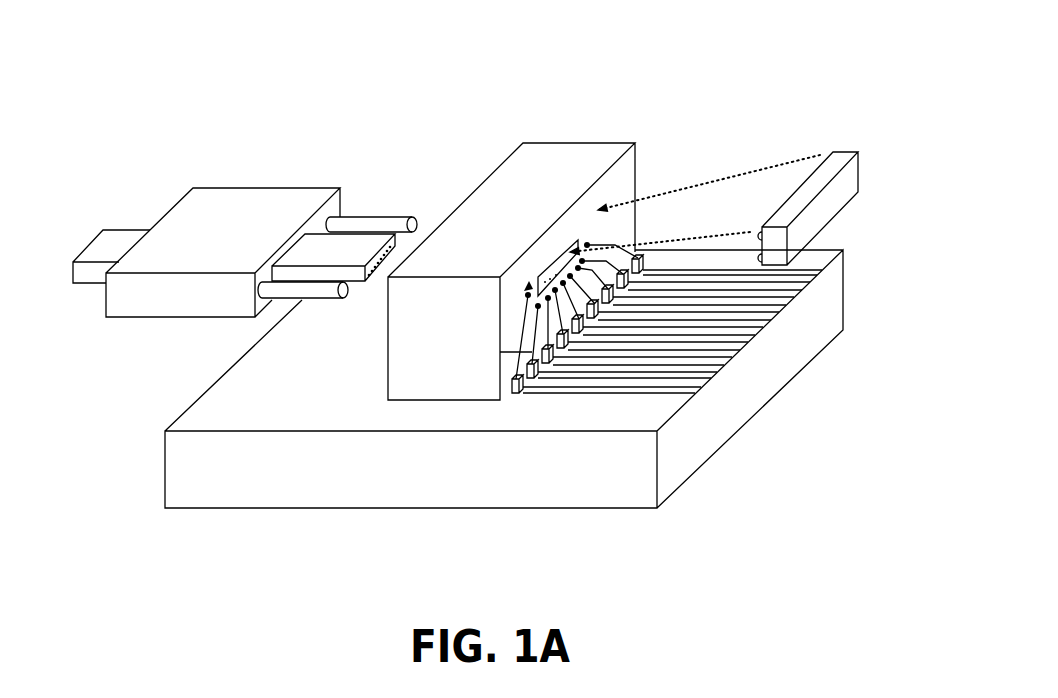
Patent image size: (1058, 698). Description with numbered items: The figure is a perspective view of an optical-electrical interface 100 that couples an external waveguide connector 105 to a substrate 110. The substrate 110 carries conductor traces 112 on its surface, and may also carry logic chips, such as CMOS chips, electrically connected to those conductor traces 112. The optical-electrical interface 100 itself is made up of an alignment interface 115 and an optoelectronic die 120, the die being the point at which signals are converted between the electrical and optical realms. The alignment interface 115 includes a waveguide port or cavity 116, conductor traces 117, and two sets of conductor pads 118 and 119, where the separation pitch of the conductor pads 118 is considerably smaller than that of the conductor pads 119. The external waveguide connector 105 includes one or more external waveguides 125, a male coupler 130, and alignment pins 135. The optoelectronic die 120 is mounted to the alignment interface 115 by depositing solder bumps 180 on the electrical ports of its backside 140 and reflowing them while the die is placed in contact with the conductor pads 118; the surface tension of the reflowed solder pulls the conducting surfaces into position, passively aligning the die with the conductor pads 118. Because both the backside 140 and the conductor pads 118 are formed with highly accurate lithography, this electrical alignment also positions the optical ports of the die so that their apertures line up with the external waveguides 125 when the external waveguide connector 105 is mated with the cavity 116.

The optical-electrical interface 100 is at (728, 78).
The external waveguide connector 105 is at (245, 240).
The substrate 110 is at (498, 484).
The conductor traces 112 is at (812, 277).
The alignment interface 115 is at (530, 221).
The waveguide port or cavity 116 is at (587, 243).
The conductor traces 117 is at (553, 353).
The conductor pads 118 is at (590, 245).
The conductor pads 119 is at (523, 387).
The optoelectronic die 120 is at (860, 173).
The external waveguides 125 is at (396, 247).
The male coupler 130 is at (330, 247).
The alignment pins 135 is at (293, 292).
The backside 140 is at (788, 175).
The solder bumps 180 is at (753, 232).